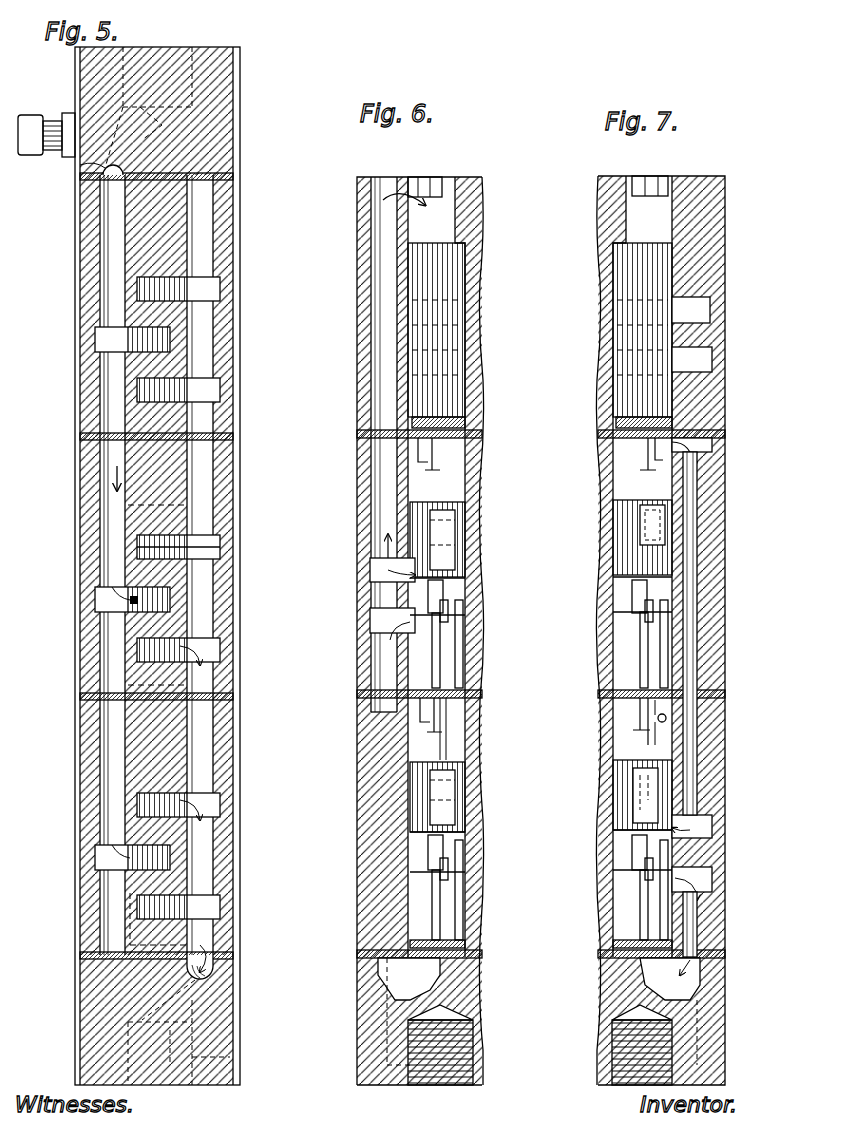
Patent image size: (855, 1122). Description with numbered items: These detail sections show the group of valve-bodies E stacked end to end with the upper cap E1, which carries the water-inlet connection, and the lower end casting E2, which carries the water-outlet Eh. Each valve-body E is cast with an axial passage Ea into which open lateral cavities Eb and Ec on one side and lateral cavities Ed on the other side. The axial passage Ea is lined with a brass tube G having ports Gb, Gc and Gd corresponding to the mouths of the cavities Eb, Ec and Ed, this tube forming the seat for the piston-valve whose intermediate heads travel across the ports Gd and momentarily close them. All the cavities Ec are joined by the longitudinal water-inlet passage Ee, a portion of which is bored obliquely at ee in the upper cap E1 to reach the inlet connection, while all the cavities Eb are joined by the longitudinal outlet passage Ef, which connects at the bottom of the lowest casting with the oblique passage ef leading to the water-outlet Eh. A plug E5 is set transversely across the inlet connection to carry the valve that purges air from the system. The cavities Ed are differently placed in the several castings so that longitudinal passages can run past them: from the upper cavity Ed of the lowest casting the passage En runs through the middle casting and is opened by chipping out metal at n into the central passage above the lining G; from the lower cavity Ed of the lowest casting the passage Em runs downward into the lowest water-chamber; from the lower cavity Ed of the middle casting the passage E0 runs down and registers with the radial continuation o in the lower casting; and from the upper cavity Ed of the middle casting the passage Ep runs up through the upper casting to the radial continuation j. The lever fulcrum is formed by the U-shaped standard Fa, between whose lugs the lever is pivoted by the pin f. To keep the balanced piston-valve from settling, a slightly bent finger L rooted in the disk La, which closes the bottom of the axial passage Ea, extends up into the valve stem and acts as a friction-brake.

In FIG. 5, the valve-body E is at (78, 268).
In FIG. 6, the valve-body E is at (357, 330).
In FIG. 7, the valve-body E is at (725, 257).
In FIG. 5, the upper cap of the valve-body group E1 is at (228, 93).
In FIG. 5, the plug E5 is at (68, 120).
In FIG. 5, the oblique portion of inlet passage ee is at (102, 170).
In FIG. 5, the water-inlet passage Ee is at (110, 520).
In FIG. 5, the water-outlet passage Ef is at (205, 470).
In FIG. 5, the brass lining-tube G is at (178, 292).
In FIG. 6, the brass lining-tube G is at (470, 278).
In FIG. 7, the brass lining-tube G is at (702, 357).
In FIG. 5, the port in lining-tube Gb is at (222, 541).
In FIG. 5, the port in lining-tube Gc is at (135, 603).
In FIG. 6, the port in lining-tube Gd is at (445, 622).
In FIG. 7, the port in lining-tube Gd is at (628, 615).
In FIG. 5, the lateral cavity Eb is at (215, 390).
In FIG. 5, the lateral cavity Ec is at (100, 340).
In FIG. 5, the lower end casting E2 is at (78, 1020).
In FIG. 6, the lower end casting E2 is at (358, 1022).
In FIG. 7, the lower end casting E2 is at (725, 1020).
In FIG. 5, the oblique outlet passage ef is at (200, 978).
In FIG. 5, the water-outlet Eh is at (230, 1058).
In FIG. 6, the water-outlet Eh is at (610, 1050).
In FIG. 7, the water-outlet Eh is at (610, 1050).
In FIG. 6, the continuation of passage Ep j is at (402, 180).
In FIG. 6, the passage Ep is at (378, 482).
In FIG. 6, the passage E0 is at (383, 668).
In FIG. 6, the continuation of passage Eo o is at (392, 708).
In FIG. 6, the axial passage Ea is at (468, 292).
In FIG. 7, the axial passage Ea is at (630, 492).
In FIG. 6, the pivot-pin f is at (425, 462).
In FIG. 7, the pivot-pin f is at (657, 458).
In FIG. 6, the standard Fa is at (425, 738).
In FIG. 7, the standard Fa is at (655, 490).
In FIG. 6, the lateral cavity Ed is at (375, 575).
In FIG. 7, the lateral cavity Ed is at (707, 310).
In FIG. 6, the finger L is at (440, 656).
In FIG. 7, the finger L is at (645, 598).
In FIG. 6, the disk or plate La is at (462, 678).
In FIG. 7, the disk or plate La is at (690, 682).
In FIG. 7, the chipped-out opening n is at (688, 439).
In FIG. 7, the passage En is at (700, 768).
In FIG. 7, the passage Em is at (703, 922).